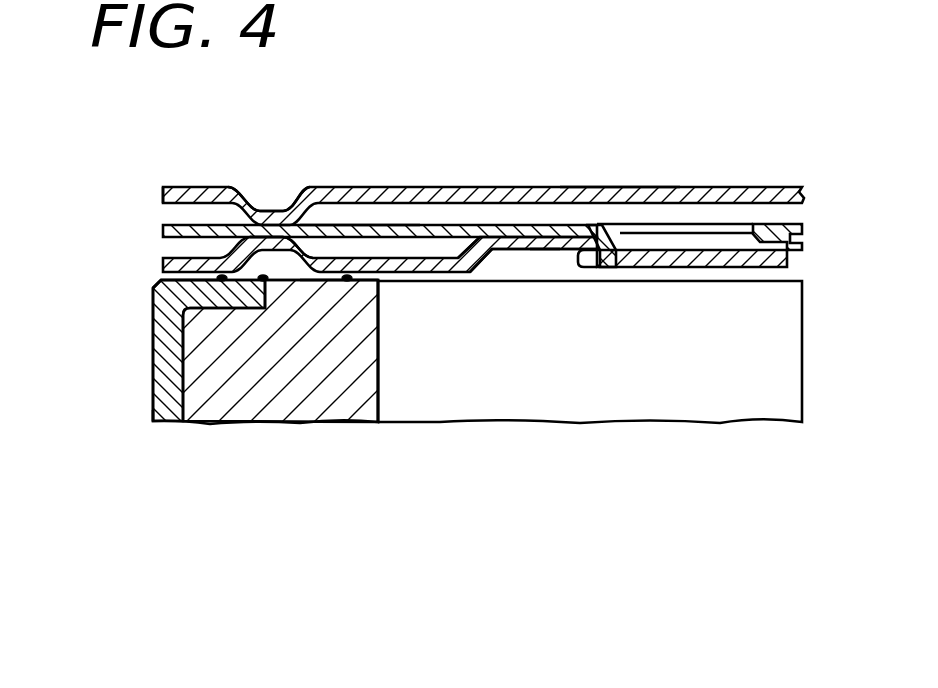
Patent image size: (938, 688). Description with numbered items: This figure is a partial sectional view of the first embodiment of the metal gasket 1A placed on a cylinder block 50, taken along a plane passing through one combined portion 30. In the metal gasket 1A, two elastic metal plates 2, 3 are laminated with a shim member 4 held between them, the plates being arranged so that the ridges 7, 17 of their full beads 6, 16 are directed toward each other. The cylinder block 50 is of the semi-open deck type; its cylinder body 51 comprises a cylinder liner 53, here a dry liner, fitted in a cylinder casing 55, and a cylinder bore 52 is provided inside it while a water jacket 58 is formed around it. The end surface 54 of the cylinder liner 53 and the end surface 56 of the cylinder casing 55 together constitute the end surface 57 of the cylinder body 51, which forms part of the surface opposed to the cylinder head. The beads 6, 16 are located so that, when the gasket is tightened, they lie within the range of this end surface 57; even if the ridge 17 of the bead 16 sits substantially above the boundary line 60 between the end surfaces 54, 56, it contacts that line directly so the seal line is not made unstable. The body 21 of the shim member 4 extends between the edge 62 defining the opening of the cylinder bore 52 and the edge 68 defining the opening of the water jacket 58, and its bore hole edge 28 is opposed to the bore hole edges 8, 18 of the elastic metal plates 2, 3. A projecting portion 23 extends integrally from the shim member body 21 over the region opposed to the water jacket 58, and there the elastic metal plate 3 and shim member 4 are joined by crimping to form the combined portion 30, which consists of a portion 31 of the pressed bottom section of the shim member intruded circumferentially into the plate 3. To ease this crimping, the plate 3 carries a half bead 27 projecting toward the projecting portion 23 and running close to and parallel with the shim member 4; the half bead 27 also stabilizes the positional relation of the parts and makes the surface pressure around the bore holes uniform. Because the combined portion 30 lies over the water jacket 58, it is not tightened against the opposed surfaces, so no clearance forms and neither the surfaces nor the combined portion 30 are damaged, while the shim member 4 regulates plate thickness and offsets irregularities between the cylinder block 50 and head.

The metal gasket 1A is at (668, 158).
The elastic metal plate 2 is at (563, 184).
The elastic metal plate 3 is at (472, 280).
The shim member 4 is at (592, 220).
The bead 6 is at (252, 186).
The ridge 7 is at (268, 210).
The bore hole edge 8 is at (158, 188).
The bead 16 is at (275, 262).
The ridge 17 is at (282, 272).
The bore hole edge 18 is at (163, 268).
The shim member body 21 is at (348, 232).
The projecting portion 23 is at (510, 232).
The half bead 27 is at (543, 248).
The bore hole edge 28 is at (163, 231).
The combined portion 30 is at (694, 234).
The intruded portion 31 is at (613, 268).
The cylinder block 50 is at (149, 413).
The cylinder body 51 is at (327, 402).
The cylinder bore 52 is at (56, 315).
The cylinder liner 53 is at (167, 374).
The end surface 54 is at (223, 279).
The cylinder casing 55 is at (360, 393).
The end surface 56 is at (339, 332).
The end surface 57 is at (283, 222).
The water jacket 58 is at (578, 352).
The boundary line 60 is at (268, 258).
The edge 62 is at (153, 285).
The edge 68 is at (350, 282).